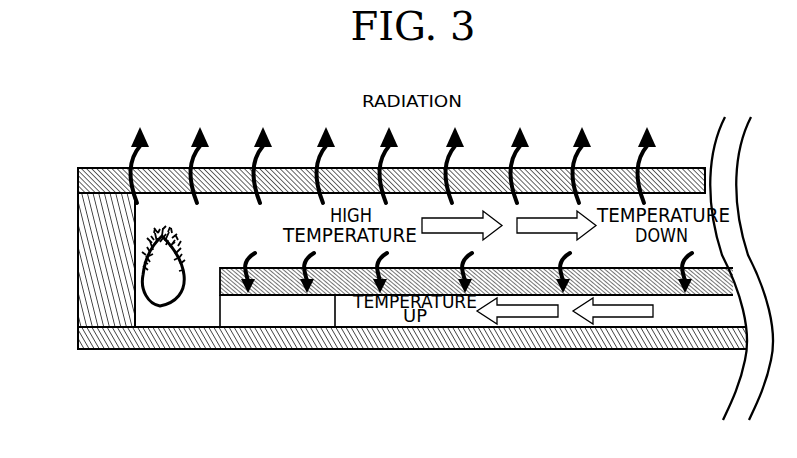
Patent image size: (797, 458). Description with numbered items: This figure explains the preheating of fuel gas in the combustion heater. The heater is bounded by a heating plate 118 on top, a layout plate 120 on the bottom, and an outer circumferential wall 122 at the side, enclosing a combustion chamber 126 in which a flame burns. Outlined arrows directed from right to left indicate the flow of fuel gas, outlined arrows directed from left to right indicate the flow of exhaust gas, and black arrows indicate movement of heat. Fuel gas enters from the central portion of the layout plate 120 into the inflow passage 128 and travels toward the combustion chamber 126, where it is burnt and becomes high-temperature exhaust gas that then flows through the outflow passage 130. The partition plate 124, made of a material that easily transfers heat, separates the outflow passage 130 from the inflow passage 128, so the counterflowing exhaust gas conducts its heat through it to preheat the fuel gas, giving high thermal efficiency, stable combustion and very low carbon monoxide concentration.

The heating plate 118 is at (88, 168).
The layout plate 120 is at (92, 351).
The outer circumferential wall 122 is at (78, 260).
The partition plate 124 is at (352, 297).
The combustion chamber 126 is at (192, 307).
The inflow passage 128 is at (717, 313).
The outflow passage 130 is at (686, 210).